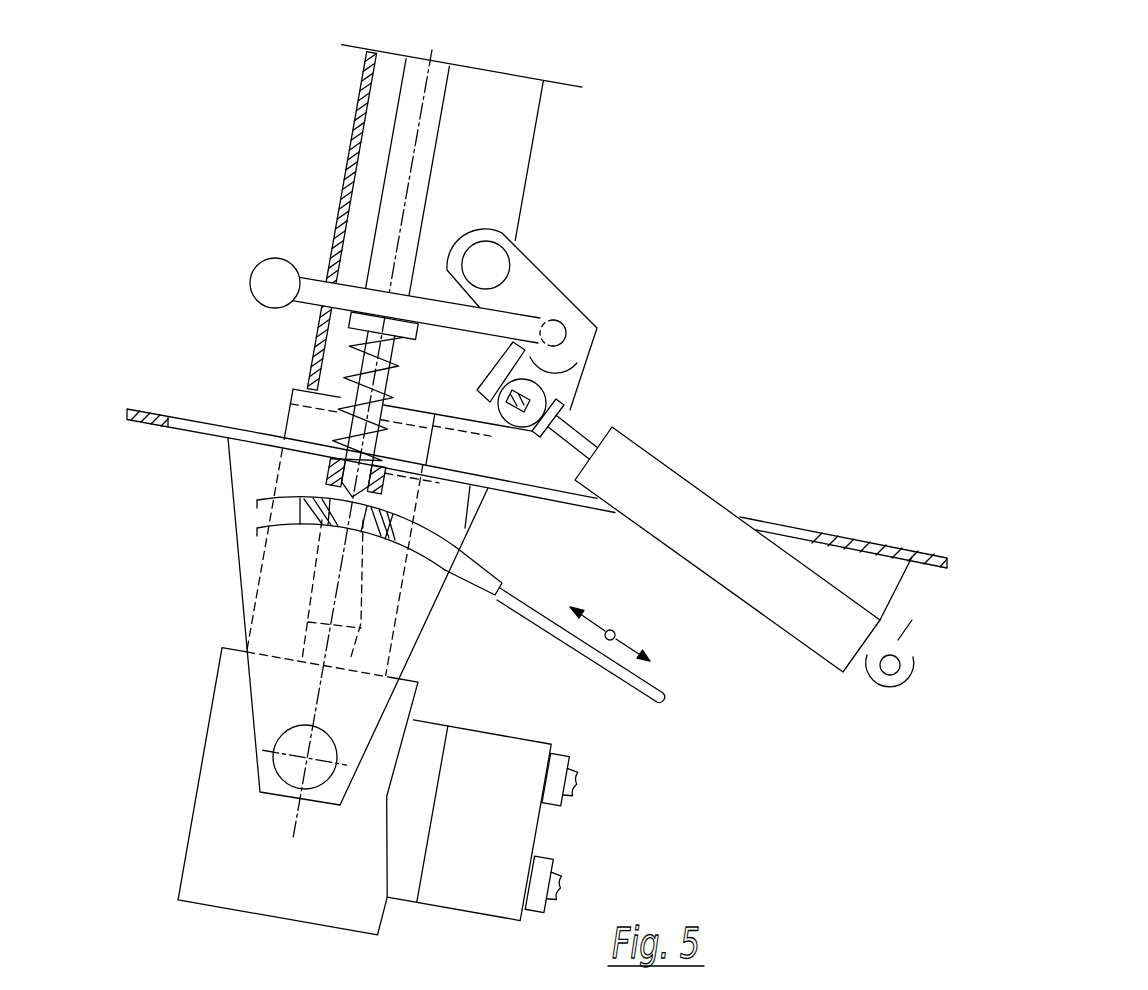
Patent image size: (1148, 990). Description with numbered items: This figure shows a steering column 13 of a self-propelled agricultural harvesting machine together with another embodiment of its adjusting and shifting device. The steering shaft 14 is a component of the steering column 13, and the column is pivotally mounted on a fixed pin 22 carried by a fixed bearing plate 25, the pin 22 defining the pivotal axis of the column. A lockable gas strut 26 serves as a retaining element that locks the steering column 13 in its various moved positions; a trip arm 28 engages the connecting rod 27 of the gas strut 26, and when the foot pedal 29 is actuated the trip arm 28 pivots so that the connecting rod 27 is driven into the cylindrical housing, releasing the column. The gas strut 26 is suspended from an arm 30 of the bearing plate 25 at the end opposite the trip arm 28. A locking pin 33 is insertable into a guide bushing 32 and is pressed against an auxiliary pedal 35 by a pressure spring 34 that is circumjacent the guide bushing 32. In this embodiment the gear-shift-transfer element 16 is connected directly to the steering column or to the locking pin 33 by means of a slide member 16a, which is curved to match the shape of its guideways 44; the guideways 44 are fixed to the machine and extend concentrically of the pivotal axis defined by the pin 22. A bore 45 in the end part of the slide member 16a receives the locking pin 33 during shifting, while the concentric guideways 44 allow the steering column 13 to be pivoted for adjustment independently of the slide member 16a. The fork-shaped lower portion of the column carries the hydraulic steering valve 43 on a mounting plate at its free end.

The steering column 13 is at (362, 100).
The steering shaft 14 is at (430, 102).
The gear-shift-transfer element 16 is at (543, 622).
The slide member 16a is at (420, 545).
The pin 22 is at (293, 735).
The bearing plate 25 is at (818, 535).
The lockable gas strut 26 is at (688, 497).
The connecting rod 27 is at (512, 391).
The trip arm 28 is at (535, 357).
The foot pedal 29 is at (537, 283).
The arm 30 is at (950, 618).
The guide bushing 32 is at (337, 458).
The locking pin 33 is at (335, 530).
The pressure spring 34 is at (353, 343).
The auxiliary pedal 35 is at (272, 272).
The hydraulic steering valve 43 is at (222, 820).
The guideways 44 is at (355, 533).
The bore 45 is at (366, 545).